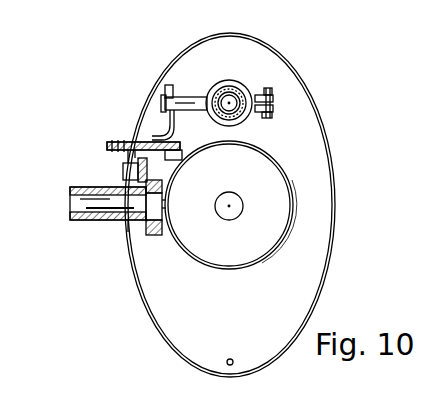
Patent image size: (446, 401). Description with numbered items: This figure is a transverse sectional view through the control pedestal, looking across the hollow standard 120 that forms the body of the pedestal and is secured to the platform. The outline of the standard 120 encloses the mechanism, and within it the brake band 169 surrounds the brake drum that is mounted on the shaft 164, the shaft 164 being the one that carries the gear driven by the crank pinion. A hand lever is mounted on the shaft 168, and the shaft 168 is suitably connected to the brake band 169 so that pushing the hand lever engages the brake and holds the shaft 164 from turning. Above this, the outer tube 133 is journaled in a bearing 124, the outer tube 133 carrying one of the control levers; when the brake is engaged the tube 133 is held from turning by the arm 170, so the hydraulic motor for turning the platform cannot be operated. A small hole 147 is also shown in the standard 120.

The hollow standard 120 is at (321, 291).
The bearing 124 is at (240, 80).
The outer tube 133 is at (222, 86).
The hole 147 is at (229, 357).
The shaft 164 is at (216, 212).
The shaft 168 is at (70, 213).
The brake band 169 is at (214, 270).
The arm 170 is at (160, 98).